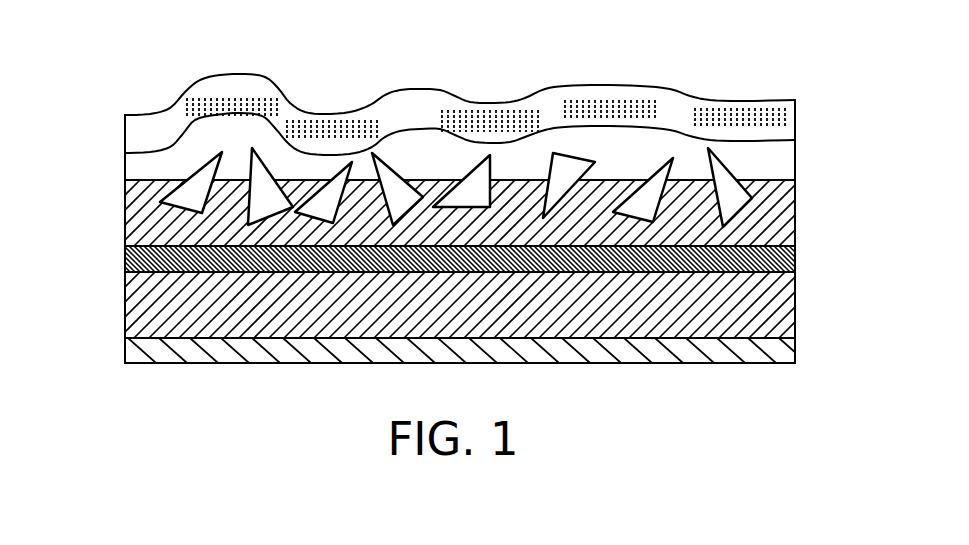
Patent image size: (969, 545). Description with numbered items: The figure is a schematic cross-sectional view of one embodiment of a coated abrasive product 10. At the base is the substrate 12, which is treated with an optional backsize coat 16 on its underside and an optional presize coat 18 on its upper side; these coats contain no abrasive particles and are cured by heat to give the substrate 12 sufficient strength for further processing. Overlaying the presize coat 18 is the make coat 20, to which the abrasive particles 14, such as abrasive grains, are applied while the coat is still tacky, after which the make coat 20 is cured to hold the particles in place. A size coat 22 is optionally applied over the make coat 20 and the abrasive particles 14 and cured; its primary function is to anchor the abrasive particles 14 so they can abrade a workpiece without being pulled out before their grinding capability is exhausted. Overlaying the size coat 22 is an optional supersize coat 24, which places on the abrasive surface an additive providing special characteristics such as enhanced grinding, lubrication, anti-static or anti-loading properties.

The coated abrasive product 10 is at (98, 65).
The substrate 12 is at (796, 307).
The abrasive particles 14 is at (165, 202).
The backsize coat 16 is at (668, 352).
The presize coat 18 is at (796, 257).
The make coat 20 is at (790, 200).
The size coat 22 is at (135, 166).
The supersize coat 24 is at (788, 127).